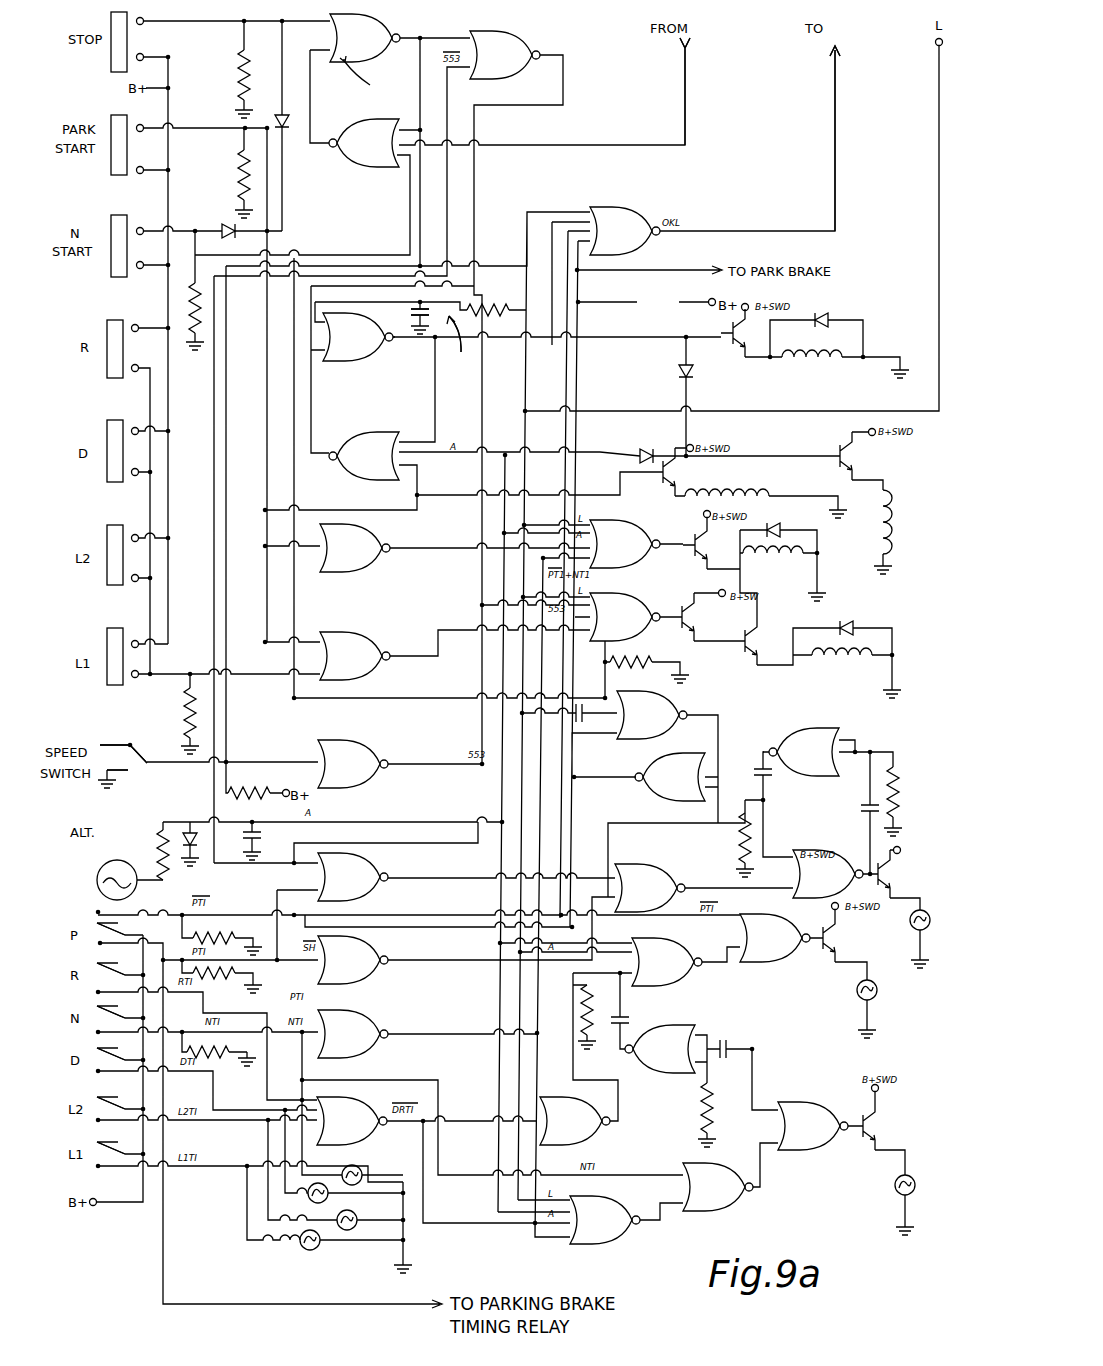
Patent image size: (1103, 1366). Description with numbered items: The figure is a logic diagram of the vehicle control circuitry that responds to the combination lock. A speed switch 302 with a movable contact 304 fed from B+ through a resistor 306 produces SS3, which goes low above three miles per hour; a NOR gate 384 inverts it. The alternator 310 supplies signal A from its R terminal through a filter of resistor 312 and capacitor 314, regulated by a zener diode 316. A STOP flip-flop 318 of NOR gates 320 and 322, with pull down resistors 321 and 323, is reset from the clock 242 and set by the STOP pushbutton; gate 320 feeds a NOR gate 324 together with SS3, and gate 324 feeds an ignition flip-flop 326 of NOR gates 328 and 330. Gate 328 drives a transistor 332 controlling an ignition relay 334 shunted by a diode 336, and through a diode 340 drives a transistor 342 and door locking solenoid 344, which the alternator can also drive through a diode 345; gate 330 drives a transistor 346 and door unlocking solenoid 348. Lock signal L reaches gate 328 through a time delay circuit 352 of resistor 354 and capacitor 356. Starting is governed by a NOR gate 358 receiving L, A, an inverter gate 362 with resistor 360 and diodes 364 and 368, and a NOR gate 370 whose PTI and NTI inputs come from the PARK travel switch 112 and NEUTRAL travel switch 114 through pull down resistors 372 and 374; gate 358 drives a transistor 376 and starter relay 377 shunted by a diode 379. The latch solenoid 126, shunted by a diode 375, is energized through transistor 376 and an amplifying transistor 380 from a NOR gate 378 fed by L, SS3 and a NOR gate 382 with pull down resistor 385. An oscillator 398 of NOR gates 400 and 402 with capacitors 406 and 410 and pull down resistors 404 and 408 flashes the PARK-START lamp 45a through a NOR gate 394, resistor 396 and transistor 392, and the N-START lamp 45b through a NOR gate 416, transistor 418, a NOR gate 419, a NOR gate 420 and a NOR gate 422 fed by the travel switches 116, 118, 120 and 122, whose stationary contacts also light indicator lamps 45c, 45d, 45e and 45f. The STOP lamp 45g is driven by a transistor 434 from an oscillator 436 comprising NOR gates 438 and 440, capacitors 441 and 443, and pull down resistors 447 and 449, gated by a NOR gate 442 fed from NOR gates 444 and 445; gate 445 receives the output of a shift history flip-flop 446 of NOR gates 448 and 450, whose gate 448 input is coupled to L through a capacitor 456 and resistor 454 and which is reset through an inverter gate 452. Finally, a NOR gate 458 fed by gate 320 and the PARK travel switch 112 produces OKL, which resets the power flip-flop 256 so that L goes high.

The NOR gate 320 is at (387, 33).
The NOR gate 324 is at (528, 50).
The STOP flip-flop 318 is at (375, 83).
The pull down resistor 321 is at (238, 70).
The pull down resistor 360 is at (217, 175).
The diode 364 is at (222, 231).
The diode 368 is at (286, 130).
The NOR gate 322 is at (375, 168).
The pull down resistor 323 is at (190, 290).
The NOR gate 458 is at (641, 218).
The resistor 354 is at (475, 308).
The transistor 332 is at (720, 333).
The transient suppression diode 336 is at (822, 318).
The capacitor 356 is at (427, 340).
The ignition flip-flop 326 is at (370, 352).
The NOR gate 328 is at (350, 362).
The time delay circuit 352 is at (432, 322).
The diode 340 is at (682, 375).
The relay 334 is at (808, 360).
The NOR gate 330 is at (374, 442).
The diode 345 is at (644, 450).
The transistor 346 is at (651, 472).
The door unlocking solenoid 348 is at (760, 496).
The transistor 342 is at (858, 462).
The solenoid 344 is at (890, 535).
The transistor 376 is at (760, 638).
The transient suppression diode 379 is at (795, 517).
The NOR gate 362 is at (345, 555).
The NOR gate 358 is at (677, 552).
The starter relay 377 is at (775, 558).
The amplifying transistor 380 is at (680, 610).
The NOR gate 382 is at (345, 636).
The transient suppression diode 375 is at (850, 622).
The NOR gate 378 is at (645, 640).
The resistor 454 is at (618, 660).
The latch solenoid 126 is at (842, 662).
The pull down resistor 385 is at (186, 692).
The movable contact 304 is at (140, 745).
The capacitor 456 is at (579, 705).
The NOR gate 448 is at (673, 712).
The oscillator 436 is at (803, 715).
The pull down resistor 447 is at (905, 760).
The resistor 306 is at (250, 790).
The NOR gate 384 is at (367, 753).
The capacitor 443 is at (755, 765).
The NOR gate 438 is at (840, 730).
The shift history flip-flop 446 is at (646, 745).
The NOR gate 450 is at (660, 798).
The zener diode 316 is at (190, 822).
The capacitor 441 is at (862, 812).
The NOR gate 440 is at (798, 850).
The speed switch 302 is at (146, 782).
The NOR gate 442 is at (670, 860).
The pull down resistor 449 is at (837, 838).
The resistor 312 is at (158, 850).
The capacitor 314 is at (256, 838).
The transistor 434 is at (900, 874).
The alternator 310 is at (97, 880).
The NOR gate 444 is at (376, 866).
The pull down resistor 396 is at (228, 935).
The transistor 392 is at (846, 938).
The PARK travel switch 112 is at (95, 923).
The NOR gate 445 is at (380, 960).
The NOR gate 400 is at (655, 945).
The NOR gate 394 is at (770, 962).
The travel switch 116 is at (95, 963).
The pull down resistor 372 is at (240, 975).
The STOP pushbutton lamp 45g is at (914, 932).
The NEUTRAL travel switch 114 is at (95, 1006).
The NOR gate 370 is at (360, 1020).
The oscillator 398 is at (655, 990).
The lamp 45a is at (874, 998).
The travel switch 118 is at (95, 1048).
The pull down resistor 408 is at (577, 1010).
The capacitor 410 is at (613, 1030).
The capacitor 406 is at (740, 1048).
The pull down resistor 374 is at (215, 1058).
The travel switch 120 is at (95, 1097).
The NOR gate 402 is at (660, 1060).
The pull down resistor 404 is at (702, 1100).
The NOR gate 416 is at (815, 1102).
The travel switch 122 is at (95, 1142).
The NOR gate 422 is at (366, 1097).
The NOR gate 452 is at (585, 1142).
The transistor 418 is at (876, 1126).
The indicator lamp 45c is at (377, 1165).
The NOR gate 419 is at (732, 1205).
The lamp 45b is at (895, 1188).
The indicator lamp 45d is at (308, 1188).
The indicator lamp 45e is at (360, 1225).
The NOR gate 420 is at (592, 1242).
The indicator lamp 45f is at (308, 1250).
The clock 242 is at (711, 79).
The power flip-flop 256 is at (849, 122).